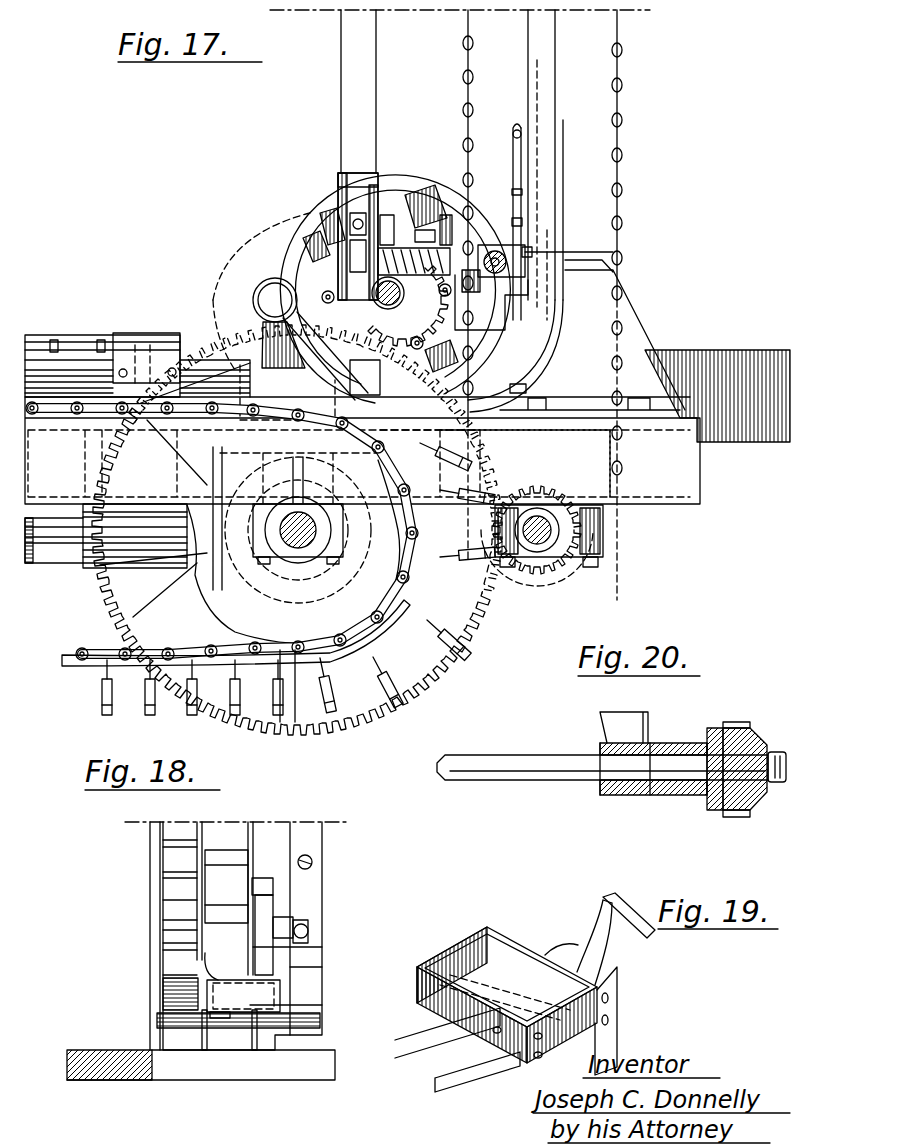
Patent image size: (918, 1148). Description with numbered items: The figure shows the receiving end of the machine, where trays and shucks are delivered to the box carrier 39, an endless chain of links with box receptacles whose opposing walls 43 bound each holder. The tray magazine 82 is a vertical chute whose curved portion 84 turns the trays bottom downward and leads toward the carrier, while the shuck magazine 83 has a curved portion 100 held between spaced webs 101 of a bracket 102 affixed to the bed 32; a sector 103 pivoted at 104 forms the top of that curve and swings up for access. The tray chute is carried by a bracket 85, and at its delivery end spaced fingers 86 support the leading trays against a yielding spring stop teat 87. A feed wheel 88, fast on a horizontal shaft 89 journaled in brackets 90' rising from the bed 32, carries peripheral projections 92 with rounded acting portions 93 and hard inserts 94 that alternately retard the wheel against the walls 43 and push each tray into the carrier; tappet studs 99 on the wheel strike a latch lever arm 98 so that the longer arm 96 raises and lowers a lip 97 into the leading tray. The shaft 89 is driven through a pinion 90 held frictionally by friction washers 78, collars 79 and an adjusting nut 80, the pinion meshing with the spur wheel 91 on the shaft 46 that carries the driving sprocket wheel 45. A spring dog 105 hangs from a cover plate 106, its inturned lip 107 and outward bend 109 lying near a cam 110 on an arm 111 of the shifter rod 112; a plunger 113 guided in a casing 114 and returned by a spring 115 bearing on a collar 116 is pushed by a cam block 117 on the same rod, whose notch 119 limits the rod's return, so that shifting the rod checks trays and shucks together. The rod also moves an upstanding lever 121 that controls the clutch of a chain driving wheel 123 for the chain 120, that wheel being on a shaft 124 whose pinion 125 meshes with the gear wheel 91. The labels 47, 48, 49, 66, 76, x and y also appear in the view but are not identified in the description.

In FIG. 18, the horizontal bed 32 is at (152, 1080).
In FIG. 17, the box-carrier 39 is at (90, 650).
In FIG. 17, the walls of the box holder 43 is at (100, 690).
In FIG. 17, the driving sprocket wheel 45 is at (195, 615).
In FIG. 17, the shaft 46 is at (292, 543).
In FIG. 17, the gear wheel 47 is at (297, 530).
In FIG. 17, the sector arm 48 is at (196, 562).
In FIG. 17, the shaft end 49 is at (42, 545).
In FIG. 17, the bracket block 66 is at (121, 363).
In FIG. 17, the guide rail 76 is at (68, 345).
In FIG. 20, the friction washers 78 is at (710, 733).
In FIG. 20, the collars 79 is at (758, 733).
In FIG. 20, the nut 80 is at (775, 785).
In FIG. 17, the tray magazine 82 is at (556, 92).
In FIG. 18, the tray magazine 82 is at (148, 851).
In FIG. 17, the shuck magazine 83 is at (377, 42).
In FIG. 17, the curved portion 84 is at (540, 362).
In FIG. 17, the bracket 85 is at (717, 396).
In FIG. 18, the supporting fingers 86 is at (204, 1050).
In FIG. 19, the supporting fingers 86 is at (415, 1060).
In FIG. 17, the spring stop teat 87 is at (525, 390).
In FIG. 18, the spring stop teat 87 is at (225, 1020).
In FIG. 19, the spring stop teat 87 is at (638, 933).
In FIG. 17, the feed wheel 88 is at (394, 222).
In FIG. 18, the feed wheel 88 is at (162, 933).
In FIG. 17, the horizontal shaft 89 is at (386, 307).
In FIG. 20, the horizontal shaft 89 is at (478, 772).
In FIG. 17, the pinion 90 is at (532, 356).
In FIG. 20, the pinion 90 is at (732, 709).
In FIG. 20, the brackets 90' is at (635, 747).
In FIG. 17, the spur wheel 91 is at (105, 586).
In FIG. 17, the peripheral projections 92 is at (426, 190).
In FIG. 18, the peripheral projections 92 is at (176, 900).
In FIG. 17, the rounded acting portion 93 is at (427, 232).
In FIG. 18, the rounded acting portion 93 is at (213, 868).
In FIG. 17, the inserts 94 is at (300, 250).
In FIG. 18, the inserts 94 is at (172, 838).
In FIG. 18, the longer arm 96 is at (298, 920).
In FIG. 18, the depending lip 97 is at (265, 960).
In FIG. 18, the lever arm 98 is at (263, 908).
In FIG. 17, the tappet studs 99 is at (458, 230).
In FIG. 18, the tappet studs 99 is at (266, 883).
In FIG. 17, the curved portion 100 is at (318, 290).
In FIG. 17, the spaced webs 101 is at (330, 300).
In FIG. 17, the bracket 102 is at (387, 447).
In FIG. 17, the sector 103 is at (252, 322).
In FIG. 17, the pivot 104 is at (258, 290).
In FIG. 17, the dog 105 is at (514, 155).
In FIG. 17, the chute cover plate 106 is at (517, 130).
In FIG. 17, the inturned lip 107 is at (617, 293).
In FIG. 17, the outward bend 109 is at (523, 192).
In FIG. 17, the cam 110 is at (523, 221).
In FIG. 17, the arm 111 is at (527, 236).
In FIG. 17, the shifter rod 112 is at (614, 251).
In FIG. 17, the plunger 113 is at (326, 240).
In FIG. 17, the casing 114 is at (362, 196).
In FIG. 17, the spring 115 is at (368, 215).
In FIG. 17, the collar 116 is at (424, 247).
In FIG. 17, the cam block 117 is at (566, 275).
In FIG. 17, the notch 119 is at (534, 252).
In FIG. 17, the endless chain 120 is at (466, 76).
In FIG. 17, the upstanding lever 121 is at (473, 416).
In FIG. 17, the chain driving wheel 123 is at (562, 527).
In FIG. 17, the shaft 124 is at (560, 500).
In FIG. 17, the pinion 125 is at (598, 570).
In FIG. 17, the chain point x is at (622, 55).
In FIG. 17, the tray y is at (372, 172).
In FIG. 18, the tray y is at (242, 982).
In FIG. 19, the tray y is at (507, 945).